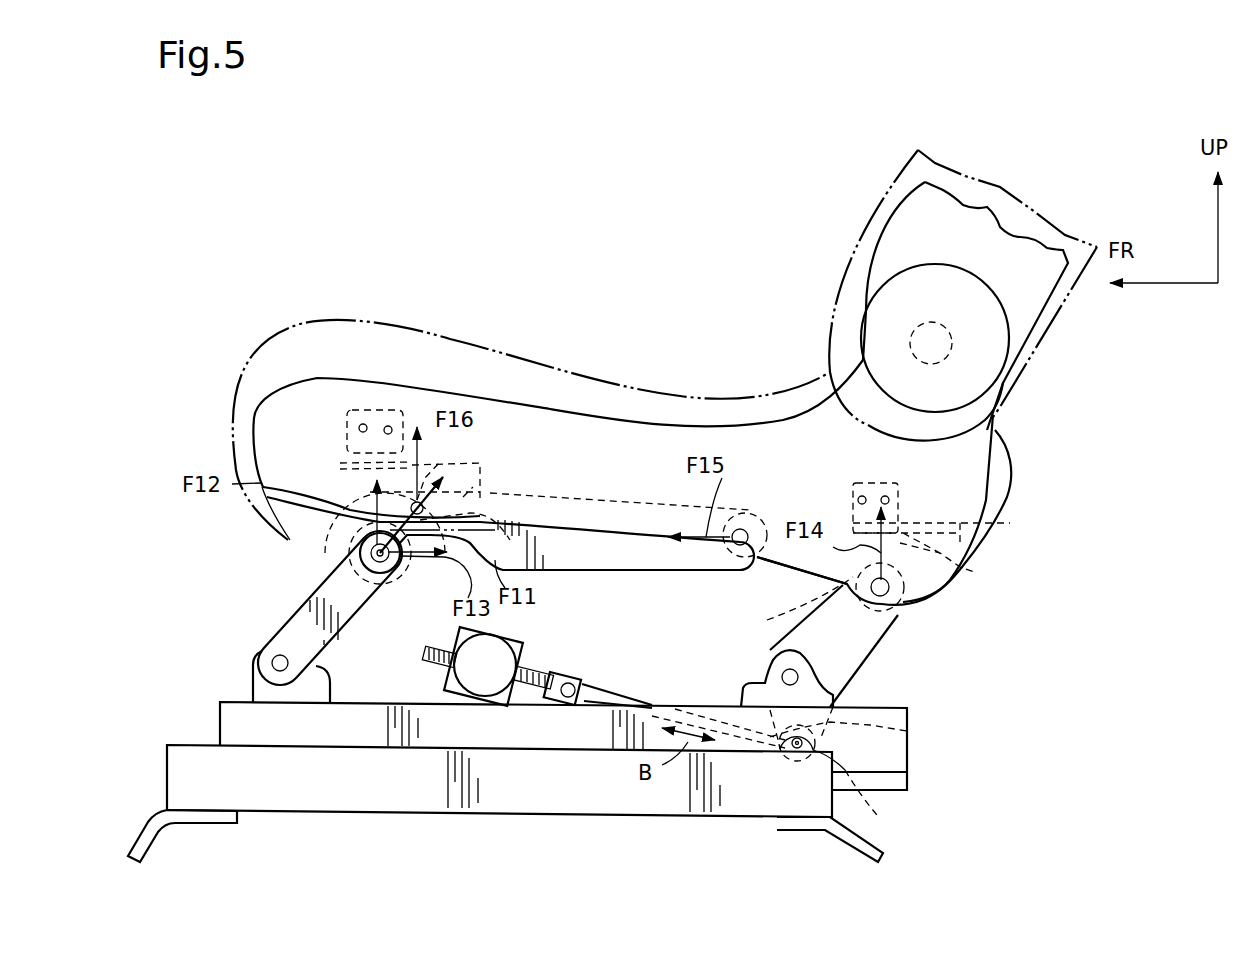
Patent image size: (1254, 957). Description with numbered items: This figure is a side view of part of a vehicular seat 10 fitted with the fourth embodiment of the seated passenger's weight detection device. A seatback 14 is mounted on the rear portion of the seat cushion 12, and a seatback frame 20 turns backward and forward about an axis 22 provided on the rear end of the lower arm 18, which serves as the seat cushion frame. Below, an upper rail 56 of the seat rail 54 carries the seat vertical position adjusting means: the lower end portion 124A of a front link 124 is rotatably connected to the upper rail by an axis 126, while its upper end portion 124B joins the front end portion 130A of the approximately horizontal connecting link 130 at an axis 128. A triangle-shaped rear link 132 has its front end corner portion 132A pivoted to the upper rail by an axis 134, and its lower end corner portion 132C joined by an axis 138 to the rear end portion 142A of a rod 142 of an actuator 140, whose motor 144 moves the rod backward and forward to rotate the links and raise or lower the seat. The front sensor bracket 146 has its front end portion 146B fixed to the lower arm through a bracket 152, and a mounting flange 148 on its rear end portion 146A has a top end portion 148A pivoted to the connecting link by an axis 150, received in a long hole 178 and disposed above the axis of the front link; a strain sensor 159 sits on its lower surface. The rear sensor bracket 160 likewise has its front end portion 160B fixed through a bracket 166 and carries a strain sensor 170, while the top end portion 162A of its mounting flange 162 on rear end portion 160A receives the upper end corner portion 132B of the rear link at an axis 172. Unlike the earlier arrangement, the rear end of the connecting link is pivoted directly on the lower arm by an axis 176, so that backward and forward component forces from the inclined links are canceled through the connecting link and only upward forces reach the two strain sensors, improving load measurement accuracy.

The vehicular seat 10 is at (700, 308).
The seat cushion 12 is at (641, 388).
The seatback 14 is at (832, 306).
The lower arm 18 is at (722, 428).
The seatback frame 20 is at (1062, 262).
The axis 22 is at (952, 345).
The seat rail 54 is at (596, 820).
The upper rail 56 is at (372, 730).
The front link 124 is at (350, 627).
The lower end portion 124A is at (260, 652).
The upper end portion 124B is at (408, 566).
The axis 126 is at (270, 665).
The axis 128 is at (383, 585).
The connecting link 130 is at (632, 578).
The front end portion 130A is at (337, 540).
The rear link 132 is at (862, 664).
The front end corner portion 132A is at (762, 652).
The upper end corner portion 132B is at (895, 612).
The lower end corner portion 132C is at (907, 731).
The axis 134 is at (800, 668).
The axis 138 is at (778, 757).
The actuator 140 is at (527, 650).
The rod 142 is at (612, 695).
The rear end portion 142A is at (874, 792).
The motor 144 is at (493, 680).
The front sensor bracket 146 is at (478, 452).
The rear end portion 146A is at (490, 462).
The front end portion 146B is at (348, 447).
The mounting flange 148 is at (484, 490).
The top end portion 148A is at (550, 545).
The axis 150 is at (620, 513).
The bracket 152 is at (370, 417).
The strain sensor 159 is at (345, 467).
The rear sensor bracket 160 is at (920, 514).
The rear end portion 160A is at (960, 531).
The front end portion 160B is at (857, 524).
The mounting flange 162 is at (917, 602).
The top end portion 162A is at (778, 618).
The bracket 166 is at (880, 480).
The strain sensor 170 is at (960, 563).
The axis 172 is at (945, 603).
The axis 176 is at (748, 530).
The hole 178 is at (353, 577).